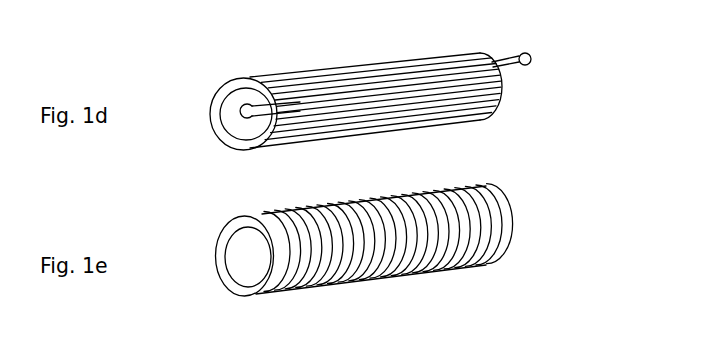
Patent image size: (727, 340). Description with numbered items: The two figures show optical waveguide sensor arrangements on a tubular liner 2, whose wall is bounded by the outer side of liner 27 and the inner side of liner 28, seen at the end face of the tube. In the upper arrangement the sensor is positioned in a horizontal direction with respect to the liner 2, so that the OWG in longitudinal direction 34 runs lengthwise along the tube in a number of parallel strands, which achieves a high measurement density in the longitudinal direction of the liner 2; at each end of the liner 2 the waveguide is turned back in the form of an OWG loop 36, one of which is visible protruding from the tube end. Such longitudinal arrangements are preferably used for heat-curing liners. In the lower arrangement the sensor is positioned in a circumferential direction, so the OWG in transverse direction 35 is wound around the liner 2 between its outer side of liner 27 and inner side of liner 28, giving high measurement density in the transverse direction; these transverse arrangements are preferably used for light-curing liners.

In FIG. 1D, the liner 2 is at (212, 102).
In FIG. 1E, the liner 2 is at (218, 246).
In FIG. 1D, the outer side of liner 27 is at (216, 143).
In FIG. 1E, the outer side of liner 27 is at (232, 222).
In FIG. 1D, the inner side of liner 28 is at (234, 93).
In FIG. 1E, the inner side of liner 28 is at (225, 268).
In FIG. 1D, the OWG in longitudinal direction 34 is at (388, 59).
In FIG. 1E, the OWG in transverse direction 35 is at (378, 257).
In FIG. 1D, the OWG loop 36 is at (530, 66).